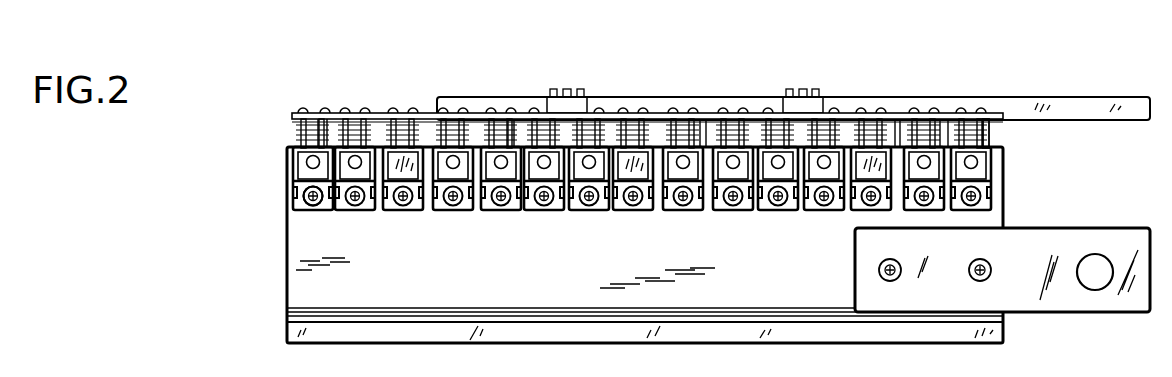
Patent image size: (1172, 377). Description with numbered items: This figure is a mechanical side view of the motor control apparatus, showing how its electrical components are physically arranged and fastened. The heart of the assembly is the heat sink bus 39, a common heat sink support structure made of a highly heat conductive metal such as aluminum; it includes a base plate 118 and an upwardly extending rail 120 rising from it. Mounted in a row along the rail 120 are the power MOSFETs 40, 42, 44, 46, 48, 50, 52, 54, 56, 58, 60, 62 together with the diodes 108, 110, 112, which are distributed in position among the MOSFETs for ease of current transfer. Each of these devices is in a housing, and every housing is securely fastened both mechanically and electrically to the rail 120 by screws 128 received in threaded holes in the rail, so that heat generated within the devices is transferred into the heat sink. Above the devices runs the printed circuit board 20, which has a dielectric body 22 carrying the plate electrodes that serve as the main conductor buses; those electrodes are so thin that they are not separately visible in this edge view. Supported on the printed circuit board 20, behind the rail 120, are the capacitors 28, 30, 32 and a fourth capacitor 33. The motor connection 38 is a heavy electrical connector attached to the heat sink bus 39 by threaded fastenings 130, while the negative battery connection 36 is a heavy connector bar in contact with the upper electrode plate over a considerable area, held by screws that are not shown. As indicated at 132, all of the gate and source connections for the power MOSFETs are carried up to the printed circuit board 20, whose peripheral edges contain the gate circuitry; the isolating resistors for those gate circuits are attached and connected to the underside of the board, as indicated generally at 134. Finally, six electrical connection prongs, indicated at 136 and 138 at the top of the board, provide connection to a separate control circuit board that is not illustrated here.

The printed circuit board 20 is at (296, 96).
The dielectric body 22 is at (286, 115).
The capacitor 28 is at (291, 137).
The capacitor 30 is at (517, 124).
The capacitor 32 is at (705, 130).
The fourth capacitor 33 is at (900, 137).
The negative battery connection 36 is at (1060, 104).
The connection from the motor 38 is at (1067, 232).
The heat sink bus 39 is at (302, 260).
The power MOSFET 40 is at (328, 213).
The power MOSFET 42 is at (372, 213).
The power MOSFET 44 is at (447, 213).
The power MOSFET 46 is at (493, 213).
The power MOSFET 48 is at (536, 213).
The power MOSFET 50 is at (584, 213).
The power MOSFET 52 is at (695, 213).
The power MOSFET 54 is at (723, 213).
The power MOSFET 56 is at (771, 213).
The power MOSFET 58 is at (818, 213).
The power MOSFET 60 is at (928, 213).
The power MOSFET 62 is at (991, 196).
The diode 108 is at (393, 213).
The diode 110 is at (646, 213).
The diode 112 is at (896, 213).
The base plate 118 is at (288, 338).
The rail 120 is at (284, 159).
The screws 128 is at (302, 194).
The threaded fastenings 130 is at (970, 282).
The gate and source connections 132 is at (992, 137).
The isolating resistors attachment 134 is at (330, 124).
The electrical connection prongs 136 is at (579, 88).
The electrical connection prongs 138 is at (813, 88).